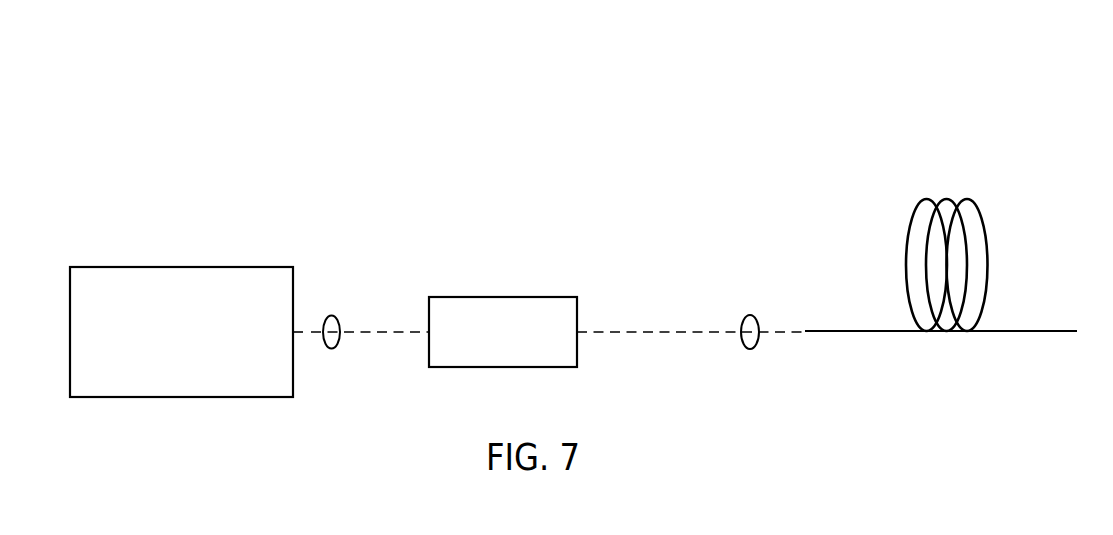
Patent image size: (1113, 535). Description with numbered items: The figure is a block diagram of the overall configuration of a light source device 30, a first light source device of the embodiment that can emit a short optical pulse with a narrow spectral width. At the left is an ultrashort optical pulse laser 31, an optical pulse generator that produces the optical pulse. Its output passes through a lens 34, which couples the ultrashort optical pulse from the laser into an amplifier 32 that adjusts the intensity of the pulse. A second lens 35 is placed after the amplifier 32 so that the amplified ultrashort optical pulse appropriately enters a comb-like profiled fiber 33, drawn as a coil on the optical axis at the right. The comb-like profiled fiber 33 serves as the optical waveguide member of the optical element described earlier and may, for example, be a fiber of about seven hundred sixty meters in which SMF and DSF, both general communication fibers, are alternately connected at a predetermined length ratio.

The light source device 30 is at (1037, 105).
The ultrashort optical pulse laser 31 is at (193, 267).
The amplifier 32 is at (503, 297).
The comb-like profiled fiber 33 is at (947, 199).
The lens 34 is at (331, 315).
The lens 35 is at (750, 315).